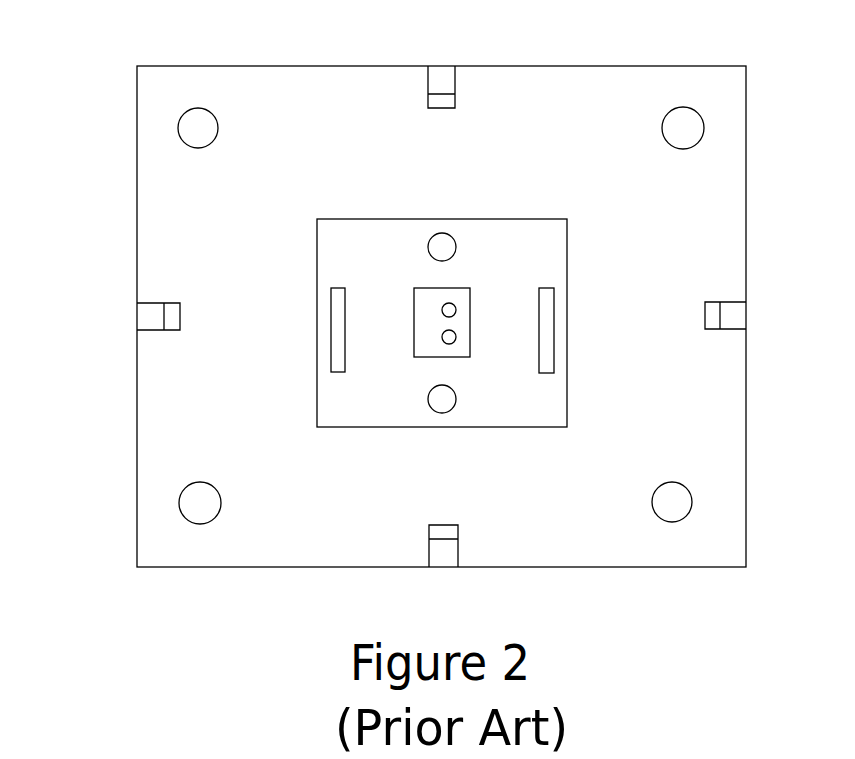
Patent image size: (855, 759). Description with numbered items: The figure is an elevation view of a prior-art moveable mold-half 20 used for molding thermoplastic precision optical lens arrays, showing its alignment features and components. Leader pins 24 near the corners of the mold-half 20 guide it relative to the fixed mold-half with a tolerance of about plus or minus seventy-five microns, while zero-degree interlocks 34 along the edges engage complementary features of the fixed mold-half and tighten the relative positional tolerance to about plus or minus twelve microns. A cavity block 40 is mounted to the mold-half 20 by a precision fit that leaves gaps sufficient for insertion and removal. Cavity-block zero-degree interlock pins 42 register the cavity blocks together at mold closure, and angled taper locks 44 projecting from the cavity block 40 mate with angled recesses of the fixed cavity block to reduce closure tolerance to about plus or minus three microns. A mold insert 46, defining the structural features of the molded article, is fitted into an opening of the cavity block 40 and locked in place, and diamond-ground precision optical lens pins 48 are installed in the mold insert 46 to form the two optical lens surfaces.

The mold-half 20 is at (217, 552).
The leader pins 24 is at (198, 128).
The zero-degree interlocks 34 is at (445, 95).
The cavity block 40 is at (533, 238).
The cavity-block zero-degree interlock pins 42 is at (447, 245).
The angled taper locks 44 is at (336, 333).
The mold insert 46 is at (424, 342).
The precision optical lens pins 48 is at (457, 337).